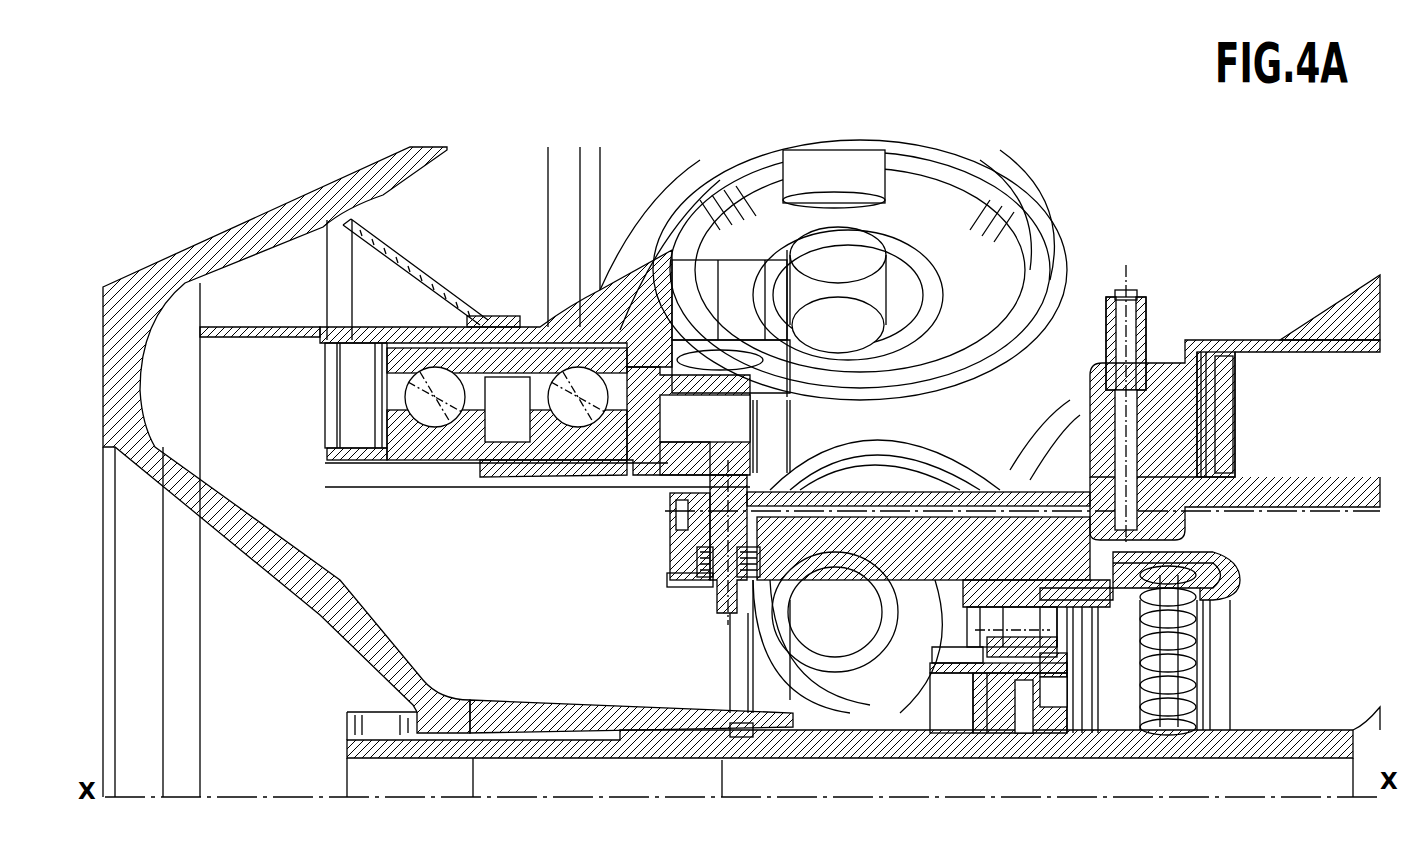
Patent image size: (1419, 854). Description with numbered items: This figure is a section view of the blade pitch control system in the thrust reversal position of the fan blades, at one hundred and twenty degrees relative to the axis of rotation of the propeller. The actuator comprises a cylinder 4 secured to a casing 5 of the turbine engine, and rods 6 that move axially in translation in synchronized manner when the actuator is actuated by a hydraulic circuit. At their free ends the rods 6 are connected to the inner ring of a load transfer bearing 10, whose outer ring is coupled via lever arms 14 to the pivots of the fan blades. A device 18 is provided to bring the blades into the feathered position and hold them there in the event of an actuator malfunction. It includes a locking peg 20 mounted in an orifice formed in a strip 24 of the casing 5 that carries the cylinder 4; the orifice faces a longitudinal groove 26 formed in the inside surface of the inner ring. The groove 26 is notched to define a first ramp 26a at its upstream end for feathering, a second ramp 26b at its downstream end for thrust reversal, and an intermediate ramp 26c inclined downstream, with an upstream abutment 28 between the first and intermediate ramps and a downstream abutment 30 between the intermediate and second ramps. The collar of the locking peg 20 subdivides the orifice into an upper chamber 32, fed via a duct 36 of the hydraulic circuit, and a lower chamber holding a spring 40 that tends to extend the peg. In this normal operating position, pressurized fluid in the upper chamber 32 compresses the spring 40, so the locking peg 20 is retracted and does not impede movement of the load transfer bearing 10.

The cylinder 4 is at (1270, 370).
The casing 5 is at (1340, 312).
The rods 6 is at (350, 455).
The load transfer bearing 10 is at (566, 300).
The lever arms 14 is at (925, 272).
The device 18 is at (592, 618).
The locking peg 20 is at (705, 578).
The strip 24 is at (940, 565).
The longitudinal groove 26 is at (507, 459).
The first ramp 26a is at (430, 462).
The second ramp 26b is at (542, 470).
The intermediate ramp 26c is at (656, 478).
The upstream abutment 28 is at (470, 470).
The downstream abutment 30 is at (598, 472).
The upper chamber 32 is at (700, 525).
The duct 36 is at (948, 500).
The spring 40 is at (705, 600).